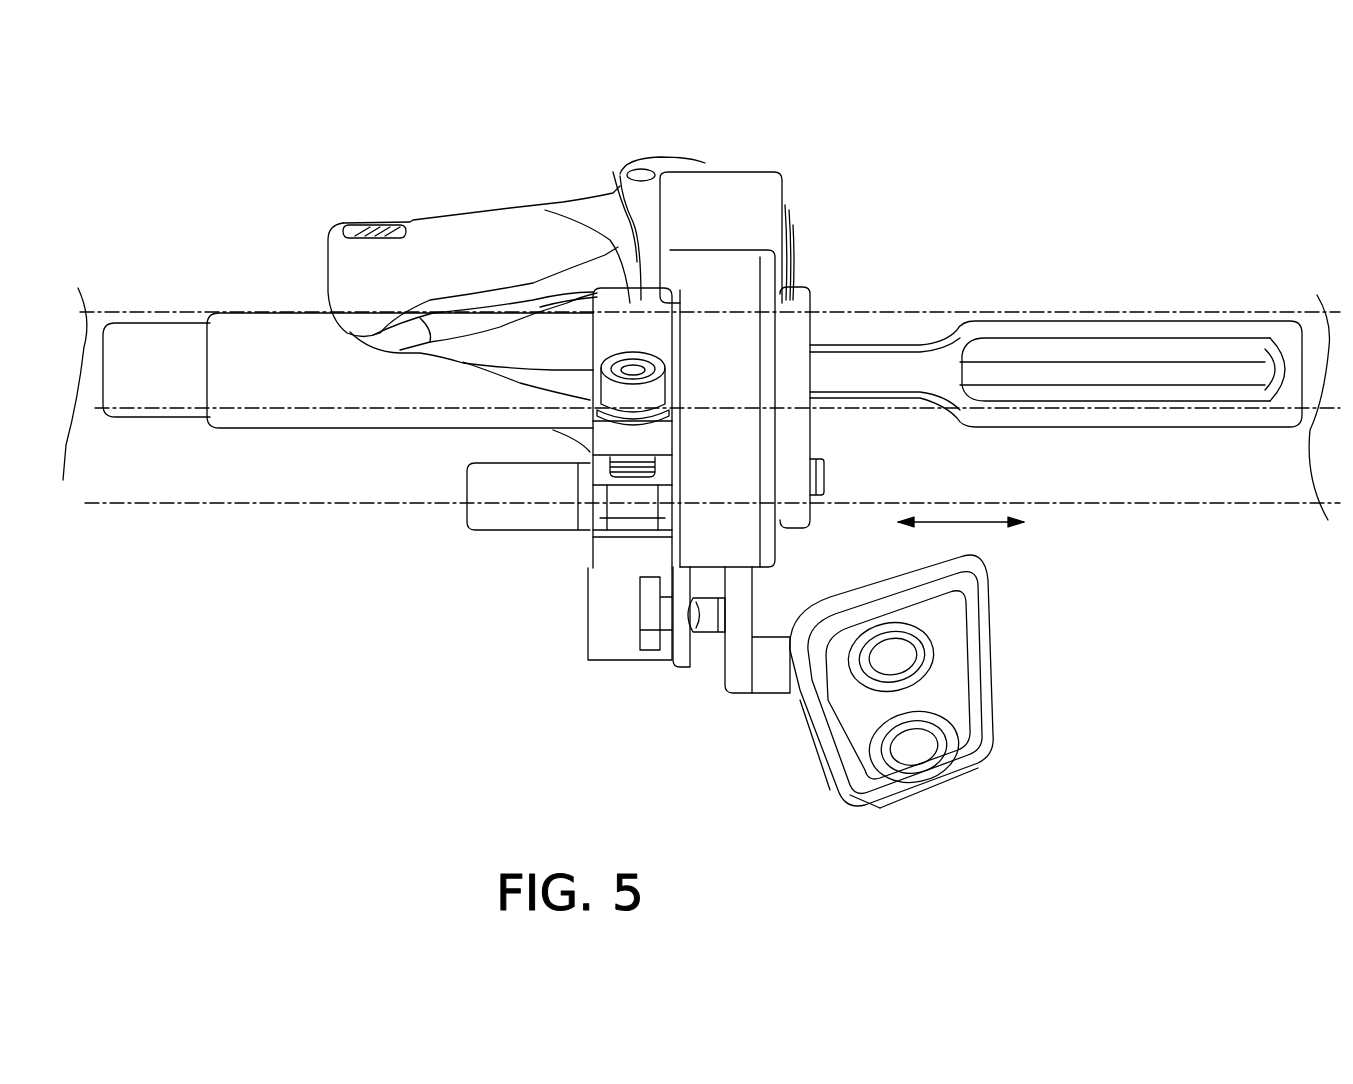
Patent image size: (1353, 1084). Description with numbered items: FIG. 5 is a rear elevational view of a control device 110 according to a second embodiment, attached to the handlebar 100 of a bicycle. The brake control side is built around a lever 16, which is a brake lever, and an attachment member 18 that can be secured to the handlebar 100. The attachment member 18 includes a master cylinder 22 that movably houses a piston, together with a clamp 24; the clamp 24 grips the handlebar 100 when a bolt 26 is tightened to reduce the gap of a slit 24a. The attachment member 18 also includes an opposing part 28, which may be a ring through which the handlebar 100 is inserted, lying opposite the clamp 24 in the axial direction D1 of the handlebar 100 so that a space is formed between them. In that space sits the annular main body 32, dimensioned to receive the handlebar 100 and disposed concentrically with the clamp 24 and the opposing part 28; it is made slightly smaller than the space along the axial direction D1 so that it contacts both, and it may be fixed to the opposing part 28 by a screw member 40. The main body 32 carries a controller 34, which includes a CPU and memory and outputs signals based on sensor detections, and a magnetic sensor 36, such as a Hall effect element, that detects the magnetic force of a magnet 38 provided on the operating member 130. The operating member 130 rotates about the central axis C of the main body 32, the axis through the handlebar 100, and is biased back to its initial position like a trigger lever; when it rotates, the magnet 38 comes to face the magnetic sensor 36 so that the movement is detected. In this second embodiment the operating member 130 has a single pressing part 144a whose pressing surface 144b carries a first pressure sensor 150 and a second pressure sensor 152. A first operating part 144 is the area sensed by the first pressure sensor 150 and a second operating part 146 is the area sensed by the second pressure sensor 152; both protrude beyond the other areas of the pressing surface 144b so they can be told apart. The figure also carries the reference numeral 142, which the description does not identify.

The lever 16 is at (1021, 312).
The attachment member 18 is at (613, 183).
The master cylinder 22 is at (510, 225).
The clamp 24 is at (612, 242).
The slit 24a is at (583, 460).
The bolt 26 is at (590, 417).
The opposing part 28 is at (803, 286).
The annular main body 32 is at (717, 270).
The controller 34 is at (640, 578).
The magnetic sensor 36 is at (667, 587).
The magnet 38 is at (750, 594).
The screw member 40 is at (826, 478).
The handlebar 100 is at (1150, 506).
The control device 110 is at (407, 192).
The operating member 130 is at (716, 667).
The mounting portion 142 is at (722, 610).
The first operating part 144 is at (940, 670).
The pressing part 144a is at (800, 730).
The pressing surface 144b is at (835, 714).
The second operating part 146 is at (872, 774).
The first pressure sensor 150 is at (943, 633).
The second pressure sensor 152 is at (983, 747).
The central axis C is at (853, 385).
The axial direction D1 is at (965, 524).